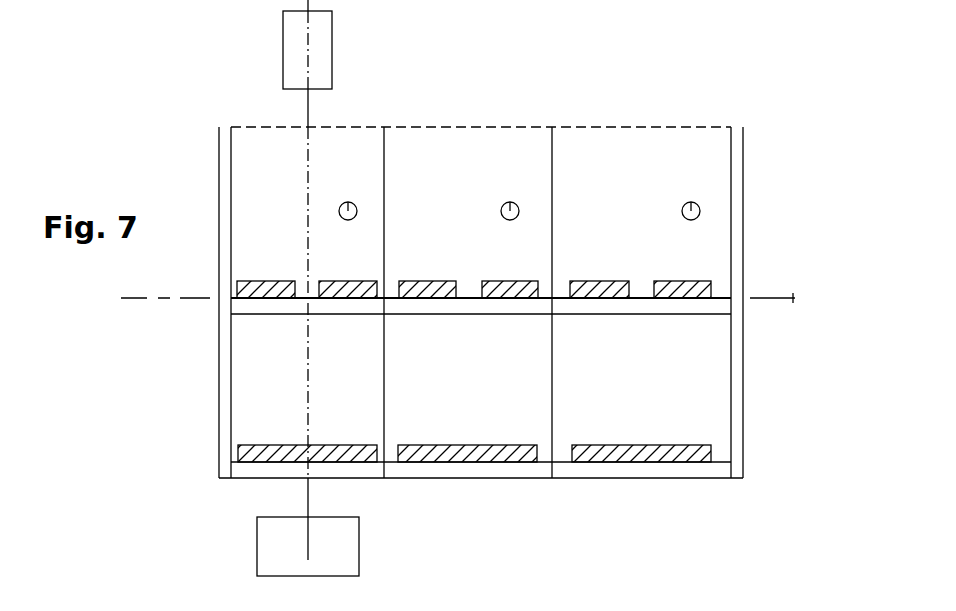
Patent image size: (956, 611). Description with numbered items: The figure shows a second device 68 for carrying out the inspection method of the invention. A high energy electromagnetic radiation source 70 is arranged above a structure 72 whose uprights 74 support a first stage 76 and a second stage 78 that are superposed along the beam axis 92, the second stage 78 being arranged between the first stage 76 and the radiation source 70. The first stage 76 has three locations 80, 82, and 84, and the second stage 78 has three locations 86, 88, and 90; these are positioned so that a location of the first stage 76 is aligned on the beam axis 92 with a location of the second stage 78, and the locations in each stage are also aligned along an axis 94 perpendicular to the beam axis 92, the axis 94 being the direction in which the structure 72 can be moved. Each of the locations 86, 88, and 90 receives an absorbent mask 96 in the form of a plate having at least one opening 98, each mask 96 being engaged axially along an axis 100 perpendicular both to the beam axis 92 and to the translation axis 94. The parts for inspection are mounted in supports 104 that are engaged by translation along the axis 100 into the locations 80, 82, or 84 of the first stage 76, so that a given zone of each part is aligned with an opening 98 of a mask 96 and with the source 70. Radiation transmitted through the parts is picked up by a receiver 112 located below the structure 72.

The second device 68 is at (183, 72).
The high energy electromagnetic radiation source 70 is at (320, 37).
The structure 72 is at (758, 180).
The uprights 74 is at (222, 315).
The first stage 76 is at (705, 473).
The second stage 78 is at (698, 306).
The location of first stage 80 is at (258, 430).
The location of first stage 82 is at (438, 442).
The location of first stage 84 is at (614, 436).
The location of second stage 86 is at (286, 278).
The location of second stage 88 is at (458, 272).
The location of second stage 90 is at (610, 275).
The beam axis 92 is at (308, 108).
The axis perpendicular to the beam axis 94 is at (145, 298).
The absorbent mask 96 is at (352, 288).
The opening 98 is at (313, 299).
The axis 100 is at (348, 202).
The support 104 is at (248, 462).
The receiver 112 is at (365, 548).